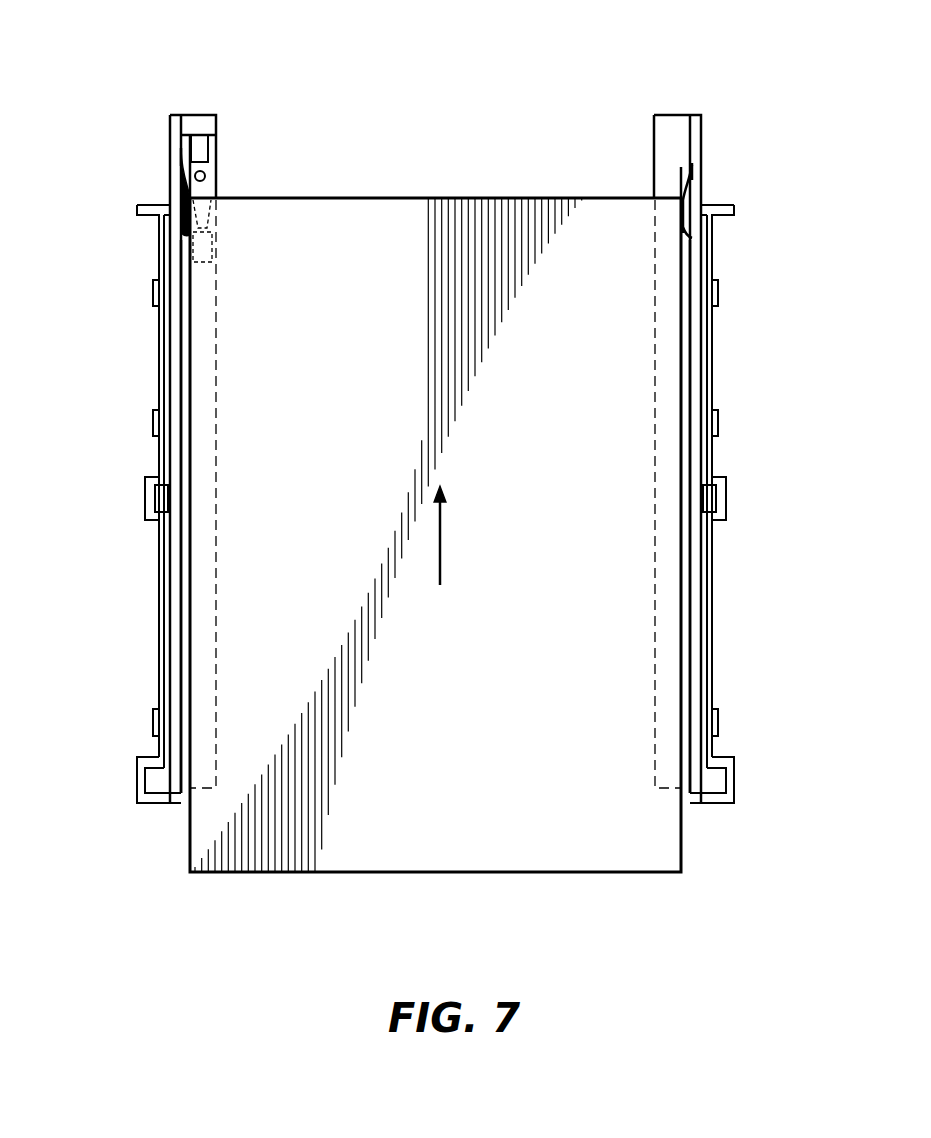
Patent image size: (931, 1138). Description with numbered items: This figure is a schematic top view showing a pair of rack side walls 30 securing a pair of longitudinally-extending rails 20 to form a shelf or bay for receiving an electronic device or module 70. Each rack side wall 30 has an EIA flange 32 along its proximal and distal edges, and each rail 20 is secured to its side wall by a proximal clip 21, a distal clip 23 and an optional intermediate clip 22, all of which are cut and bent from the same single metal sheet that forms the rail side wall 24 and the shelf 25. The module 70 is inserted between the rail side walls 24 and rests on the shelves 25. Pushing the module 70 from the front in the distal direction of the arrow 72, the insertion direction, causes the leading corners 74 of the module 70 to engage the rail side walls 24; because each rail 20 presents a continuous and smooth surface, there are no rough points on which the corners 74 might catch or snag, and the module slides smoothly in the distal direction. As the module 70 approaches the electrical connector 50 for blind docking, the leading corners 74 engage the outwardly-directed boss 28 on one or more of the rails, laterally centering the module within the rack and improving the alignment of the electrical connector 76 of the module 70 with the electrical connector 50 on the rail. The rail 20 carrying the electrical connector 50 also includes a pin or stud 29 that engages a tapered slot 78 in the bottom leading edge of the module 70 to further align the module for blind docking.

The longitudinally-extending rail 20 is at (184, 109).
The proximal clip 21 is at (155, 712).
The intermediate clip 22 is at (155, 420).
The distal clip 23 is at (155, 289).
The rail side wall 24 is at (185, 630).
The shelf 25 is at (214, 545).
The latch element 28 is at (187, 168).
The pin or stud 29 is at (205, 176).
The rack side wall 30 is at (160, 348).
The EIA flange 32 is at (165, 805).
The electrical connector 50 is at (220, 130).
The electronic device or module 70 is at (412, 855).
The arrow 72 is at (441, 560).
The leading corners 74 is at (193, 197).
The electrical connector of the module 76 is at (212, 250).
The tapered slot 78 is at (214, 205).